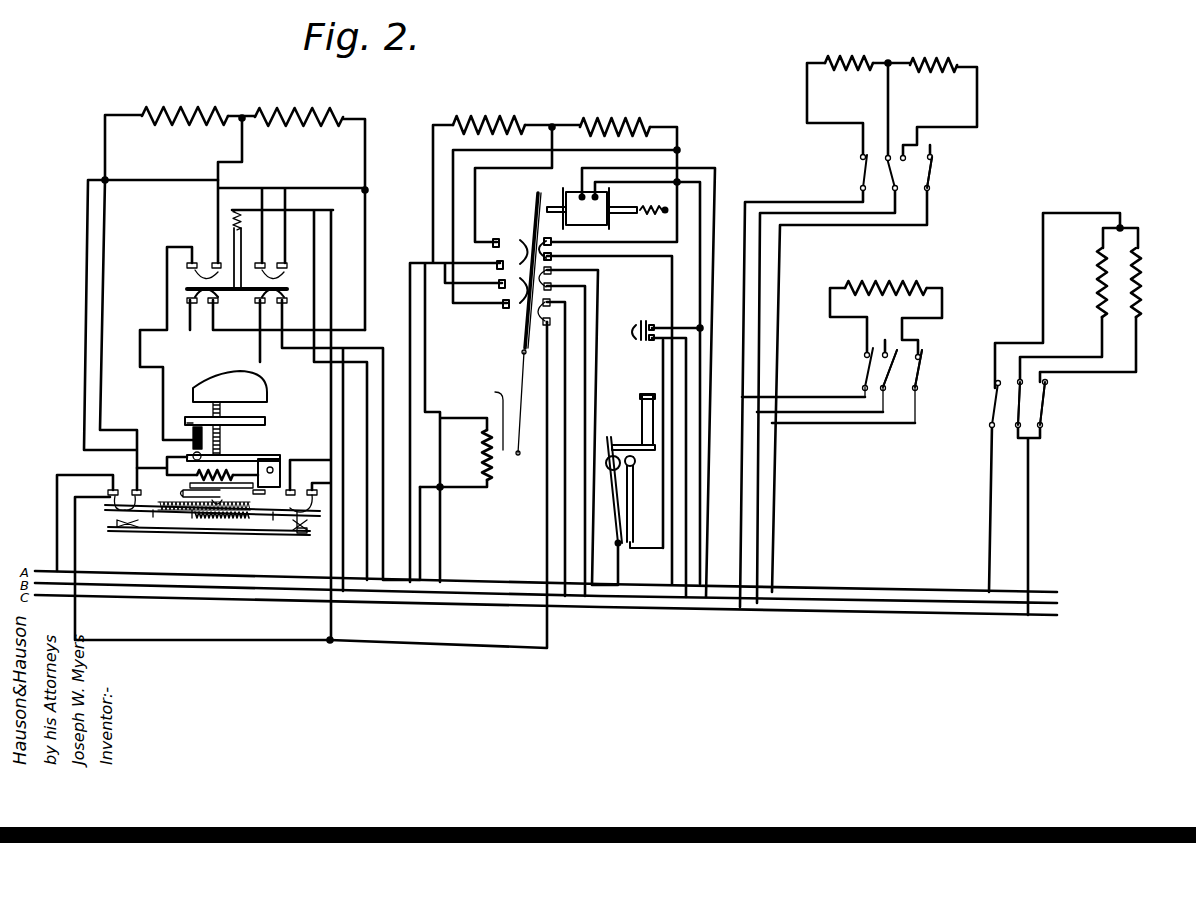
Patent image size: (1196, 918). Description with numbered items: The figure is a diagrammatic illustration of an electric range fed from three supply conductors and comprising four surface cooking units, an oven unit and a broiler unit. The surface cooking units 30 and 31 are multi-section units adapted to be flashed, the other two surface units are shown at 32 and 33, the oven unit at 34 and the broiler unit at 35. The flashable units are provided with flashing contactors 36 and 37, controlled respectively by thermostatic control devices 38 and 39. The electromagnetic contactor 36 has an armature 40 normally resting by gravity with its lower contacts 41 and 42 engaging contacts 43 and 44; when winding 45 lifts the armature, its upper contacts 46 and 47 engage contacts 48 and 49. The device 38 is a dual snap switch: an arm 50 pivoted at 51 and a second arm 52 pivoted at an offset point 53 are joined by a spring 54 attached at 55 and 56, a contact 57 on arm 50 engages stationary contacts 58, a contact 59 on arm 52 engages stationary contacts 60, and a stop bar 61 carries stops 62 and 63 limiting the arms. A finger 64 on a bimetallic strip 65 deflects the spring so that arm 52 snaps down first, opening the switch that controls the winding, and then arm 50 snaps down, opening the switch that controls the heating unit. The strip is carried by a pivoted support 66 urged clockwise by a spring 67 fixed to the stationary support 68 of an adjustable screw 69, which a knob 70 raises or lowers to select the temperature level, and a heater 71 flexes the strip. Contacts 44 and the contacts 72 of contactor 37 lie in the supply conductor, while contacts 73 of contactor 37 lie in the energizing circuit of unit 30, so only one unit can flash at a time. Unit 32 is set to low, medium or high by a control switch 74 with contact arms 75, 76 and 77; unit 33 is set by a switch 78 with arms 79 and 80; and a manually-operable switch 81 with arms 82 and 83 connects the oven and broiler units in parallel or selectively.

The surface cooking unit 30 is at (248, 100).
The surface cooking unit 31 is at (565, 110).
The surface cooking unit 32 is at (905, 53).
The surface cooking unit 33 is at (895, 273).
The oven unit 34 is at (1143, 288).
The broiler unit 35 is at (1098, 296).
The flashing contactor 36 is at (192, 226).
The flashing contactor 37 is at (522, 230).
The thermostatic control device 38 is at (272, 449).
The thermostatic control device 39 is at (484, 401).
The armature 40 is at (242, 250).
The lower contact 41 is at (226, 309).
The lower contact 42 is at (288, 294).
The contact 43 is at (196, 295).
The contact 44 is at (260, 304).
The winding 45 is at (237, 212).
The upper contact 46 is at (203, 276).
The upper contact 47 is at (286, 280).
The contact 48 is at (188, 260).
The contact 49 is at (268, 266).
The arm 50 is at (118, 514).
The pivot 51 is at (192, 520).
The arm 52 is at (300, 530).
The pivot point 53 is at (237, 518).
The spring 54 is at (183, 491).
The attachment point 55 is at (153, 519).
The attachment point 56 is at (273, 522).
The contact 57 is at (112, 503).
The stationary contacts 58 is at (130, 489).
The contact 59 is at (313, 489).
The stationary contacts 60 is at (295, 489).
The stop bar 61 is at (217, 535).
The stop 62 is at (122, 533).
The stop 63 is at (298, 533).
The finger 64 is at (224, 494).
The bimetallic strip 65 is at (261, 497).
The pivoted support 66 is at (282, 460).
The spring 67 is at (192, 436).
The stationary support 68 is at (265, 419).
The adjustable screw 69 is at (225, 410).
The knob 70 is at (240, 378).
The heater 71 is at (226, 460).
The contacts 72 is at (552, 289).
The contacts 73 is at (551, 322).
The control switch 74 is at (969, 173).
The contact arm 75 is at (863, 175).
The contact arm 76 is at (891, 176).
The contact arm 77 is at (930, 183).
The switch 78 is at (959, 386).
The arm 79 is at (920, 358).
The arm 80 is at (893, 375).
The manually-operable switch 81 is at (1077, 438).
The arm 82 is at (1022, 410).
The arm 83 is at (1048, 386).